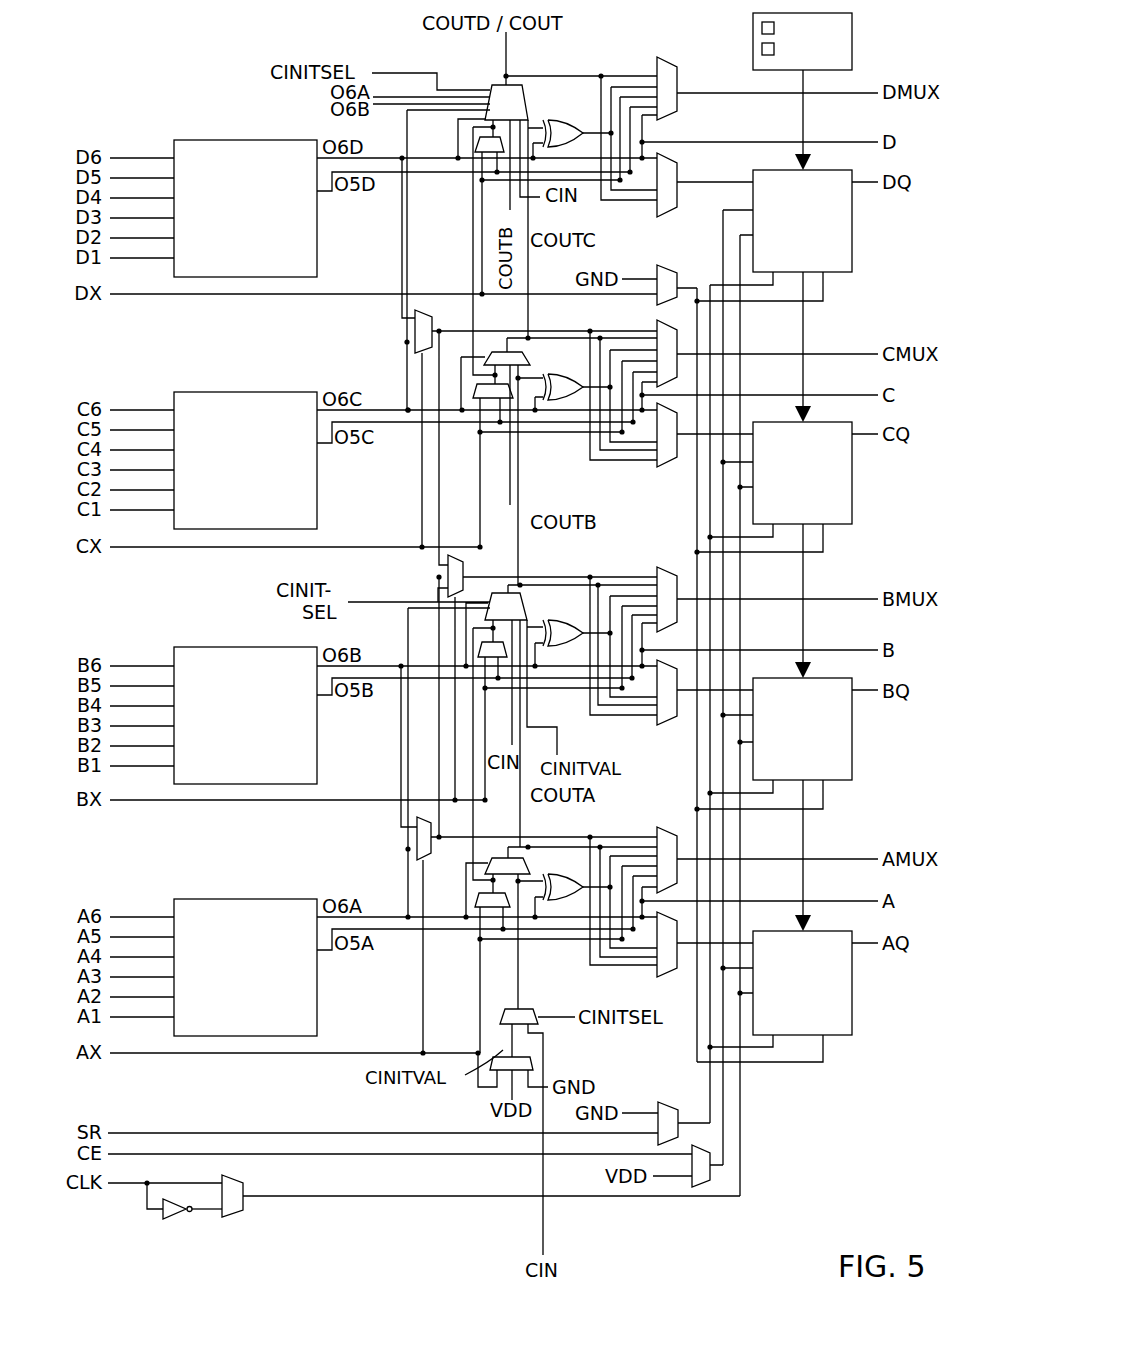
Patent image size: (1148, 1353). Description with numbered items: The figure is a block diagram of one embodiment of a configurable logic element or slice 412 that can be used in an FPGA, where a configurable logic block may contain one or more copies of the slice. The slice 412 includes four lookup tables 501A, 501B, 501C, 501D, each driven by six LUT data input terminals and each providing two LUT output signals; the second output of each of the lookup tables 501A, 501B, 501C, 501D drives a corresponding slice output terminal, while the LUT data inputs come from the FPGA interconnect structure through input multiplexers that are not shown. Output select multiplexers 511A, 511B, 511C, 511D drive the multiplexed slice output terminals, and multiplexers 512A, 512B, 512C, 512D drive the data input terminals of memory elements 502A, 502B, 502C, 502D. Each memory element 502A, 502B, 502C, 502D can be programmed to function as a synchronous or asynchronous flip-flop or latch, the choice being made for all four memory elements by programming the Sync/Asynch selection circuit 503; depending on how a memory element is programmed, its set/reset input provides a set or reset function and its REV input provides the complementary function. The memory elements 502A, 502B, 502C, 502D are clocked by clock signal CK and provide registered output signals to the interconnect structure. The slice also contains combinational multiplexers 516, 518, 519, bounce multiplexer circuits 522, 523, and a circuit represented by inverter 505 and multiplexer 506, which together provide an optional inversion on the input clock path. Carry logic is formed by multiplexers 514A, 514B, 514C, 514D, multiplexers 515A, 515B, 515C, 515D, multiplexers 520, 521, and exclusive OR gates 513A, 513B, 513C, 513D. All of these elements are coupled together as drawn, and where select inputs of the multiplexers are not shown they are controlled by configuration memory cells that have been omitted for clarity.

The configurable logic element or slice 412 is at (200, 68).
The Sync/Asynch selection circuit 503 is at (752, 55).
The inverter 505 is at (172, 1222).
The multiplexer 506 is at (236, 1212).
The lookup table 501A is at (245, 967).
The lookup table 501B is at (245, 715).
The lookup table 501C is at (245, 460).
The lookup table 501D is at (245, 208).
The memory element 502A is at (802, 983).
The memory element 502B is at (802, 729).
The memory element 502C is at (802, 473).
The memory element 502D is at (802, 221).
The output select multiplexer 511A is at (658, 828).
The output select multiplexer 511B is at (658, 568).
The output select multiplexer 511C is at (660, 320).
The output select multiplexer 511D is at (683, 96).
The multiplexer 512A is at (668, 979).
The multiplexer 512B is at (668, 727).
The multiplexer 512C is at (668, 470).
The multiplexer 512D is at (673, 170).
The exclusive OR gate 513A is at (565, 868).
The exclusive OR gate 513B is at (563, 611).
The exclusive OR gate 513C is at (565, 365).
The exclusive OR gate 513D is at (563, 112).
The multiplexer 514A is at (492, 858).
The multiplexer 514B is at (503, 594).
The multiplexer 514C is at (500, 352).
The multiplexer 514D is at (522, 86).
The multiplexer 515A is at (502, 908).
The multiplexer 515B is at (500, 657).
The multiplexer 515C is at (512, 400).
The multiplexer 515D is at (477, 153).
The combinational multiplexer 516 is at (425, 310).
The combinational multiplexer 518 is at (431, 573).
The combinational multiplexer 519 is at (428, 862).
The multiplexer 520 is at (534, 1060).
The multiplexer 521 is at (668, 268).
The bounce multiplexer circuit 522 is at (660, 1104).
The bounce multiplexer circuit 523 is at (697, 1190).